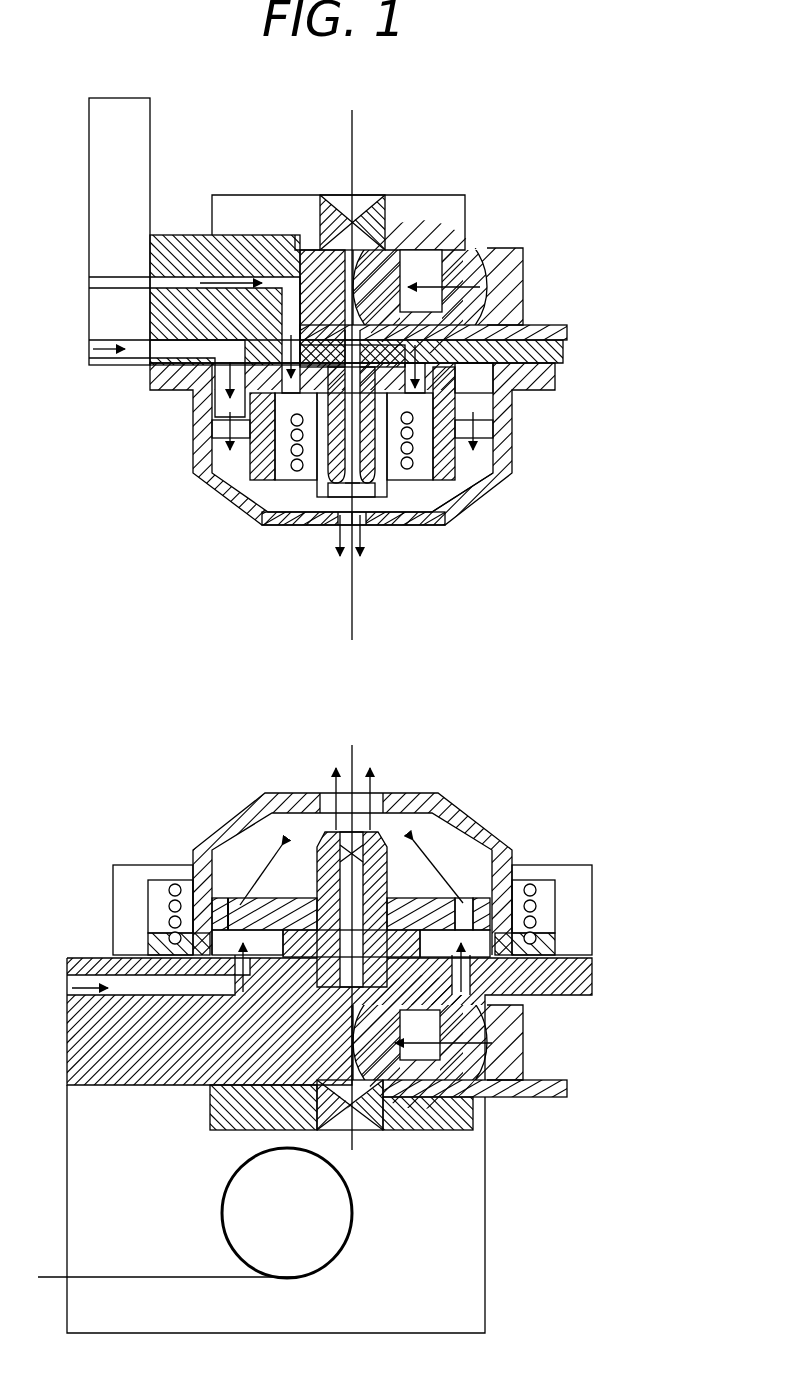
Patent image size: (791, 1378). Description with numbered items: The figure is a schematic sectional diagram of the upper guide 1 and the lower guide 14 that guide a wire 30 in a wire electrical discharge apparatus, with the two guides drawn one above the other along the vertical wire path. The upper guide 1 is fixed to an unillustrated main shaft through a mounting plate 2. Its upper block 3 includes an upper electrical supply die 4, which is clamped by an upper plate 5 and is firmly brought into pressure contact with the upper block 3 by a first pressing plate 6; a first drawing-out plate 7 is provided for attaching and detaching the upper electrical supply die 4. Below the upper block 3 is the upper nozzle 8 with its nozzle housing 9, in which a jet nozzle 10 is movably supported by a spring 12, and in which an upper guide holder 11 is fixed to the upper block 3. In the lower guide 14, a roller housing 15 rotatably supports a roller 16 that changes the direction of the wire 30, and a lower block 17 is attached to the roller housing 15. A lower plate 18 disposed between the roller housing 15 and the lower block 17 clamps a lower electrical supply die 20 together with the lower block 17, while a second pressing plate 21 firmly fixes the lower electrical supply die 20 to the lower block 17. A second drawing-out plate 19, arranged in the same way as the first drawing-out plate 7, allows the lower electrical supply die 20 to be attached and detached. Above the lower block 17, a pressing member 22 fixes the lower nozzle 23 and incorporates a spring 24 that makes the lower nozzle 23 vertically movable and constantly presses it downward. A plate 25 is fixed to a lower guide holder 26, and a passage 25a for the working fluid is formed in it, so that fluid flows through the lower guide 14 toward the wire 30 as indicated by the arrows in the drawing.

The upper guide 1 is at (520, 176).
The mounting plate 2 is at (135, 140).
The upper block 3 is at (165, 240).
The upper electrical supply die 4 is at (465, 258).
The upper plate 5 is at (255, 206).
The first pressing plate 6 is at (505, 306).
The first drawing-out plate 7 is at (567, 333).
The upper nozzle 8 is at (505, 450).
The nozzle housing 9 is at (465, 505).
The jet nozzle 10 is at (432, 528).
The upper guide holder 11 is at (322, 505).
The spring 12 is at (276, 472).
The lower guide 14 is at (492, 772).
The roller housing 15 is at (472, 1268).
The roller 16 is at (337, 1258).
The lower block 17 is at (72, 1038).
The lower plate 18 is at (428, 1130).
The second drawing-out plate 19 is at (565, 1092).
The lower electrical supply die 20 is at (480, 1098).
The second pressing plate 21 is at (520, 1046).
The pressing member 22 is at (578, 906).
The lower nozzle 23 is at (218, 832).
The spring 24 is at (555, 926).
The plate 25 is at (285, 900).
The passage 25a is at (235, 916).
The lower guide holder 26 is at (388, 866).
The wire 30 is at (354, 612).